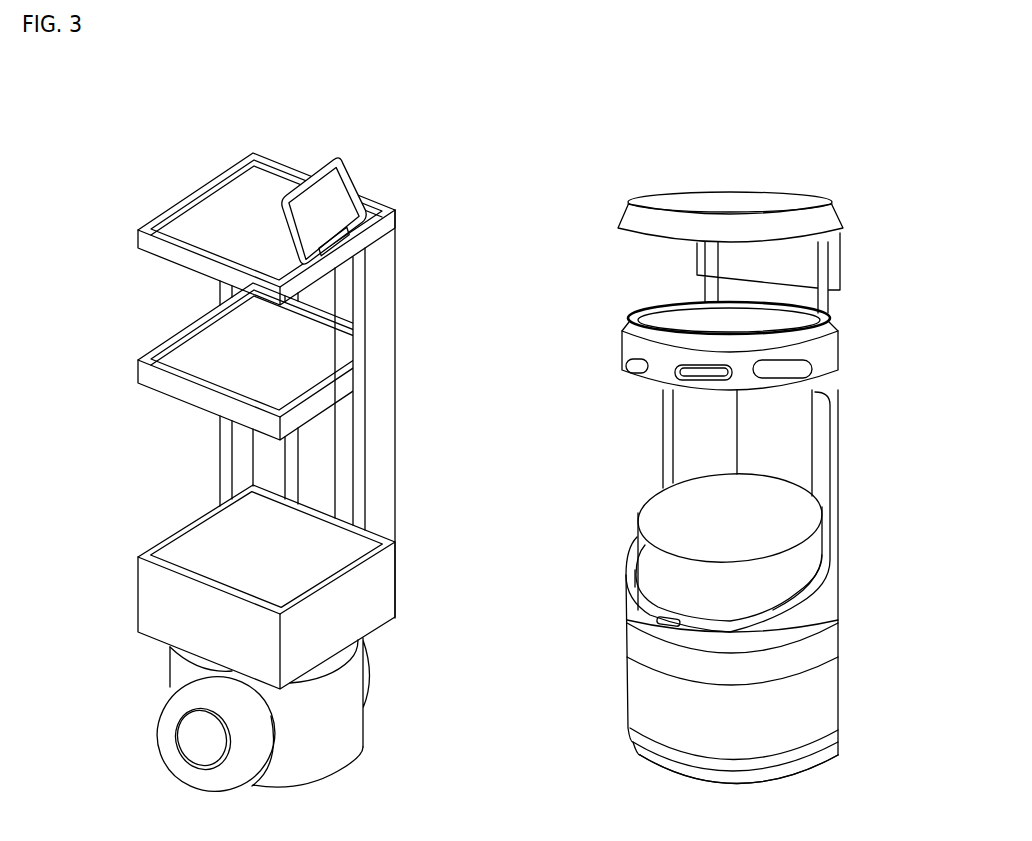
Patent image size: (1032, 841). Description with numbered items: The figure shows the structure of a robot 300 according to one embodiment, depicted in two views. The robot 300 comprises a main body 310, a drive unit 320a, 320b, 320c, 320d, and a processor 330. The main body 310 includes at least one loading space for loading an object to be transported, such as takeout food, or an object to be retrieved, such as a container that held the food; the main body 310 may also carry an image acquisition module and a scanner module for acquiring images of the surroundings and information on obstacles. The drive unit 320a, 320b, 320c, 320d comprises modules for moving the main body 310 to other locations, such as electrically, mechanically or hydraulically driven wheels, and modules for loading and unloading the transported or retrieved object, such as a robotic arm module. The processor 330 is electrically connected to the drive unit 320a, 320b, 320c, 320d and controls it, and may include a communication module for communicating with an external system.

The robot 300 is at (137, 112).
The main body 310 is at (422, 201).
The drive unit 320a is at (197, 742).
The drive unit 320b is at (158, 587).
The drive unit 320c is at (150, 375).
The drive unit 320d is at (152, 239).
The processor 330 is at (182, 662).